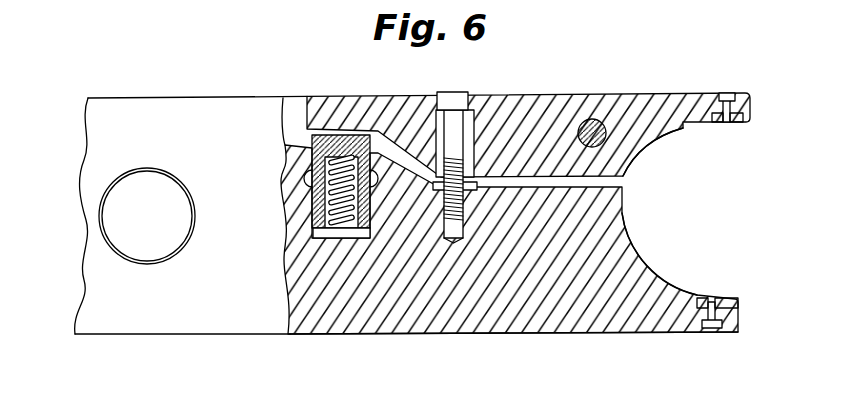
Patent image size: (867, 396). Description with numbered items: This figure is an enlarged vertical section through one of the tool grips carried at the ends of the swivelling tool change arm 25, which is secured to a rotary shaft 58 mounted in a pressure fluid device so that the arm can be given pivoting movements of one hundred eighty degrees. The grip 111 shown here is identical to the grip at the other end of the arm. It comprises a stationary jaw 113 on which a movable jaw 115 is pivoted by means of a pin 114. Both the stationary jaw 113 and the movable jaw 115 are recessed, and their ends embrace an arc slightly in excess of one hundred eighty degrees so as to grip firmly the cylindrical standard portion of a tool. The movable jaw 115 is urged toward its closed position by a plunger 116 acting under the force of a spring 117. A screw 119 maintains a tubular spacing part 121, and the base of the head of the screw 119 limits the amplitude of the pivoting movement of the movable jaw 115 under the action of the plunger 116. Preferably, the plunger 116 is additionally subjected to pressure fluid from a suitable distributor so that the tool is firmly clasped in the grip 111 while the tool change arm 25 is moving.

The tool change arm 25 is at (233, 96).
The rotary shaft 58 is at (147, 185).
The tool grip 111 is at (651, 94).
The stationary jaw 113 is at (645, 283).
The pin 114 is at (593, 120).
The movable jaw 115 is at (655, 132).
The plunger 116 is at (333, 137).
The spring 117 is at (340, 168).
The screw 119 is at (456, 97).
The tubular spacing part 121 is at (493, 140).